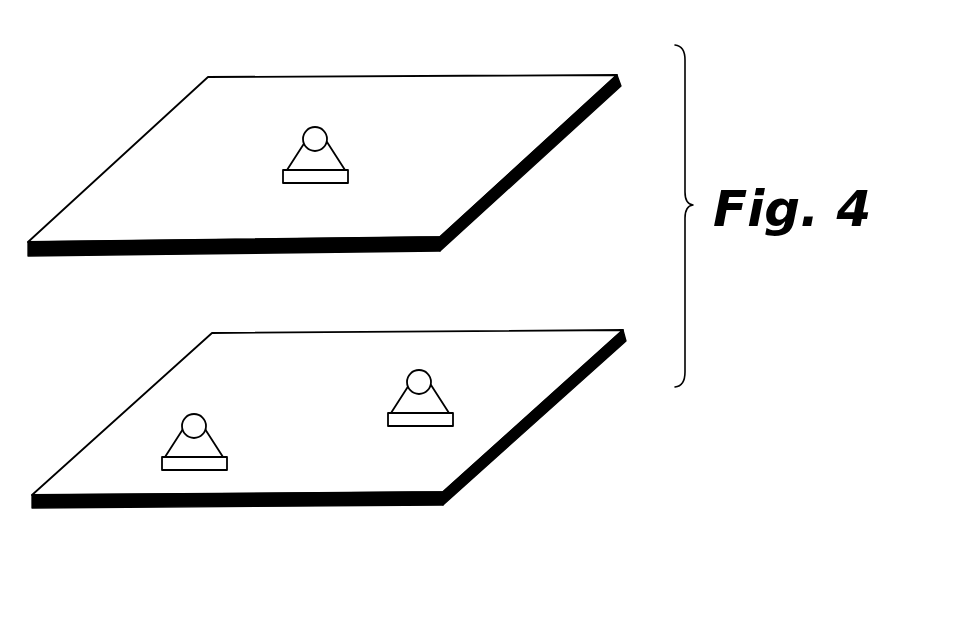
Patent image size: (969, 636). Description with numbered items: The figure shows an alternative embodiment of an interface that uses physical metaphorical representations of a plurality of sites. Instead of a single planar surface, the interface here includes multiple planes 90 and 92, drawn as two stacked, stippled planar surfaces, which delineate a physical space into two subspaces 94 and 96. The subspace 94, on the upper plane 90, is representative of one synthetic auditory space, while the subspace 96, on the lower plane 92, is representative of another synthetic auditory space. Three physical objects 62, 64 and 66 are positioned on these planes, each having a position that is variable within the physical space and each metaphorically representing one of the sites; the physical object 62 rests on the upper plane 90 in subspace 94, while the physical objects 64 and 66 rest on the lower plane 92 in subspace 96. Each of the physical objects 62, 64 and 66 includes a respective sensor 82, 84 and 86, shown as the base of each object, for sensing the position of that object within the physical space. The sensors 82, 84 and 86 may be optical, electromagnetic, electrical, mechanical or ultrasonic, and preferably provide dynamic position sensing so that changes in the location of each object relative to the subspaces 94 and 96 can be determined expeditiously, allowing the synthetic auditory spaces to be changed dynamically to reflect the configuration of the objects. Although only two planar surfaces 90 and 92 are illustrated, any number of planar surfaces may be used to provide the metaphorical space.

The physical object 62 is at (331, 149).
The sensor 82 is at (348, 178).
The physical object 64 is at (435, 388).
The sensor 84 is at (453, 417).
The physical object 66 is at (177, 433).
The sensor 86 is at (163, 467).
The plane 90 is at (577, 122).
The plane 92 is at (530, 423).
The subspace 94 is at (385, 212).
The subspace 96 is at (427, 482).